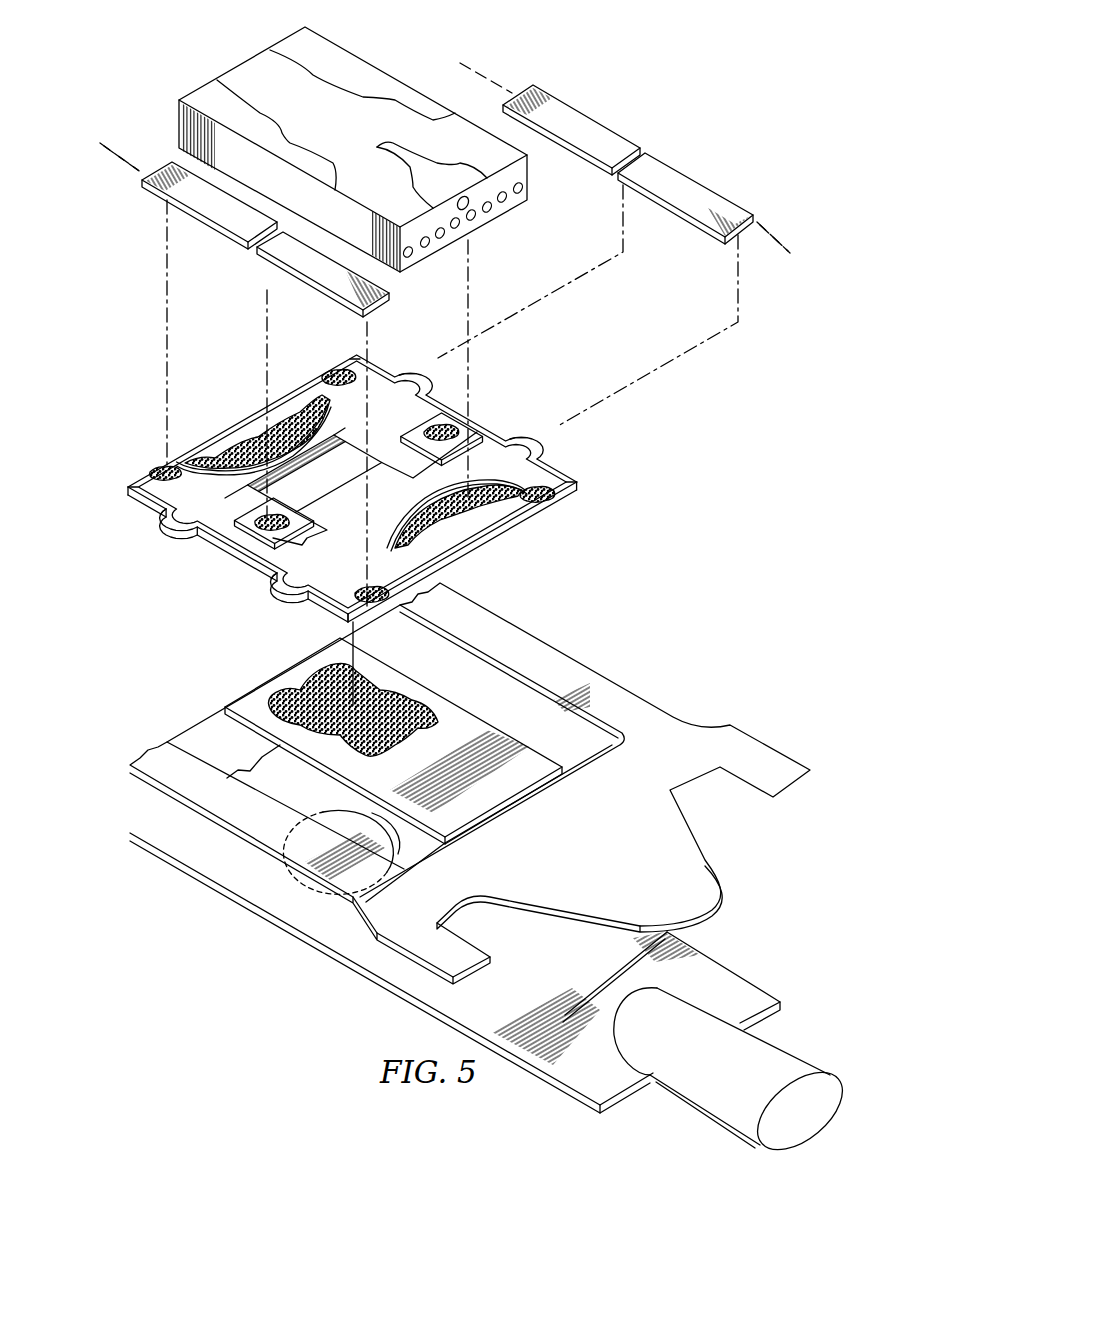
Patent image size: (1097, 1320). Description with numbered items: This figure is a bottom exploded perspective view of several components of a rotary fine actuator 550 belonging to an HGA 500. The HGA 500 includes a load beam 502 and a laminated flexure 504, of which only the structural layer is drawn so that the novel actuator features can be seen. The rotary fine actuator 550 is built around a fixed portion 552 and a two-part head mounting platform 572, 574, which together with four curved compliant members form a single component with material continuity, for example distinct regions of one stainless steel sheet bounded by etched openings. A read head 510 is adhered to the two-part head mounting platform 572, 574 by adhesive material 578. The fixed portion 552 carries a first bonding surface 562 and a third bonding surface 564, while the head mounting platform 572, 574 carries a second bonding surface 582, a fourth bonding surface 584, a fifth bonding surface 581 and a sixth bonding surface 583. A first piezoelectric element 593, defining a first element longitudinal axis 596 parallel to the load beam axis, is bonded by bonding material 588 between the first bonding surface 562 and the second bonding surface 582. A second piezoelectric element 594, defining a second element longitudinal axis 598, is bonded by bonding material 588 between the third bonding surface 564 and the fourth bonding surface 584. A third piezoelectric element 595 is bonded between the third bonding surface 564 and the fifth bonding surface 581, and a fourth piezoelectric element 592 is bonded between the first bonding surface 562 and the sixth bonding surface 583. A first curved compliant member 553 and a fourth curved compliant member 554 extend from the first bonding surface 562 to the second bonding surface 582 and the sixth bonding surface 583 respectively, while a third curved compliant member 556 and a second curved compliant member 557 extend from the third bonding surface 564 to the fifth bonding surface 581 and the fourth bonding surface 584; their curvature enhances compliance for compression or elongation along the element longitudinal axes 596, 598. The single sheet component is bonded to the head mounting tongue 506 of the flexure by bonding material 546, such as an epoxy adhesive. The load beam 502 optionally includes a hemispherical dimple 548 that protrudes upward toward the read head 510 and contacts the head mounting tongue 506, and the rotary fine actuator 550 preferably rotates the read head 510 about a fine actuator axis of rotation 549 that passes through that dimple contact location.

The head gimbal assembly (HGA) 500 is at (742, 86).
The load beam 502 is at (762, 978).
The laminated flexure 504 is at (648, 712).
The head mounting tongue 506 is at (455, 740).
The read head 510 is at (252, 78).
The bonding material 546 is at (292, 688).
The dimple 548 is at (330, 817).
The fine actuator axis of rotation 549 is at (356, 633).
The rotary fine actuator 550 is at (453, 478).
The fixed portion 552 is at (315, 474).
The first curved compliant member 553 is at (172, 534).
The fourth curved compliant member 554 is at (283, 600).
The third curved compliant member 556 is at (412, 373).
The second curved compliant member 557 is at (521, 437).
The first bonding surface 562 is at (257, 548).
The third bonding surface 564 is at (452, 420).
The head mounting platform (first part) 572 is at (254, 423).
The head mounting platform (second part) 574 is at (409, 528).
The adhesive material 578 is at (216, 448).
The fifth bonding surface 581 is at (354, 362).
The second bonding surface 582 is at (134, 491).
The sixth bonding surface 583 is at (348, 618).
The fourth bonding surface 584 is at (561, 478).
The bonding material 588 is at (326, 373).
The fourth piezoelectric element 592 is at (300, 257).
The first piezoelectric element 593 is at (248, 226).
The second piezoelectric element 594 is at (684, 190).
The third piezoelectric element 595 is at (584, 130).
The first element longitudinal axis 596 is at (118, 150).
The second element longitudinal axis 598 is at (768, 240).